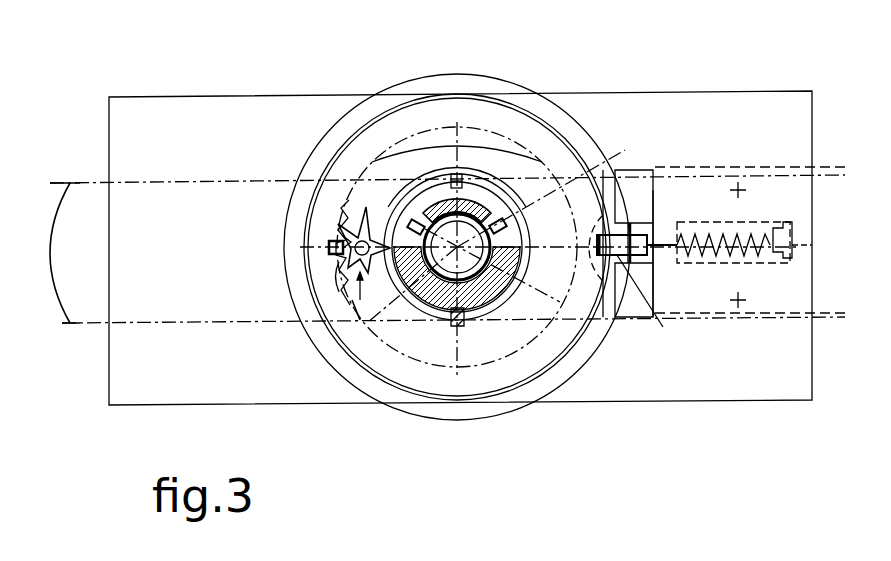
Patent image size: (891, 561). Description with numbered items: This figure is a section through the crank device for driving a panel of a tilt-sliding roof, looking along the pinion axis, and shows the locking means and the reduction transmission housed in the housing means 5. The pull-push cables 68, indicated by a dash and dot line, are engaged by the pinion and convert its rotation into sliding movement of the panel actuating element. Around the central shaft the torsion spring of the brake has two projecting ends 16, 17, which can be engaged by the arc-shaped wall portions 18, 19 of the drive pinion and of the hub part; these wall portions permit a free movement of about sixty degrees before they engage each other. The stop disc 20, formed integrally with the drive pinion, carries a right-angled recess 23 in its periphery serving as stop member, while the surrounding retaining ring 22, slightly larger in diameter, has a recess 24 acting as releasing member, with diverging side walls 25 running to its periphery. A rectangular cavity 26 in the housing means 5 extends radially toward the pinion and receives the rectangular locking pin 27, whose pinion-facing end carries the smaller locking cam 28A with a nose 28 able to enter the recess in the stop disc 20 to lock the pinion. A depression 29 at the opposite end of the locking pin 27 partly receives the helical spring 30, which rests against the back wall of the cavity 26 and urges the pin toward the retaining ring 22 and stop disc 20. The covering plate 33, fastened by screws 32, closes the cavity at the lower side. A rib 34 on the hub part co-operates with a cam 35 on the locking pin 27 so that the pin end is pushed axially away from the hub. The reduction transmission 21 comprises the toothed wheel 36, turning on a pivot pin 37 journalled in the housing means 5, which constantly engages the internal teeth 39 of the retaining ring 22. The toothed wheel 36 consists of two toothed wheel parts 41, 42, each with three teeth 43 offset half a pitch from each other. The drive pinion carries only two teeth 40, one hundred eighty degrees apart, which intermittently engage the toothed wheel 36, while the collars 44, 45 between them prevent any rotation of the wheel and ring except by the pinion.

The housing means 5 is at (795, 130).
The projecting end of torsion spring 16 is at (513, 192).
The projecting end of torsion spring 17 is at (408, 178).
The arc-shaped wall portion 18 is at (480, 197).
The arc-shaped wall portion 19 is at (471, 307).
The stop disc 20 is at (502, 377).
The reduction transmission 21 is at (352, 300).
The retaining ring 22 is at (413, 393).
The recess 23 is at (634, 267).
The recess 24 is at (585, 205).
The diverging side walls 25 is at (597, 243).
The rectangular cavity 26 is at (790, 222).
The locking pin 27 is at (670, 225).
The nose 28 is at (606, 242).
The locking cam 28A is at (663, 327).
The depression 29 is at (712, 288).
The helical spring 30 is at (795, 242).
The screws 32 is at (748, 192).
The covering plate 33 is at (790, 275).
The rib 34 is at (587, 203).
The cam 35 is at (668, 305).
The toothed wheel 36 is at (332, 268).
The pivot pin 37 is at (334, 244).
The internal teeth 39 is at (350, 306).
The teeth 40 is at (456, 186).
The toothed wheel part 41 is at (329, 249).
The toothed wheel part 42 is at (338, 238).
The teeth 43 is at (364, 227).
The collar 44 is at (430, 185).
The collar 45 is at (496, 182).
The pull-push cables 68 is at (56, 253).